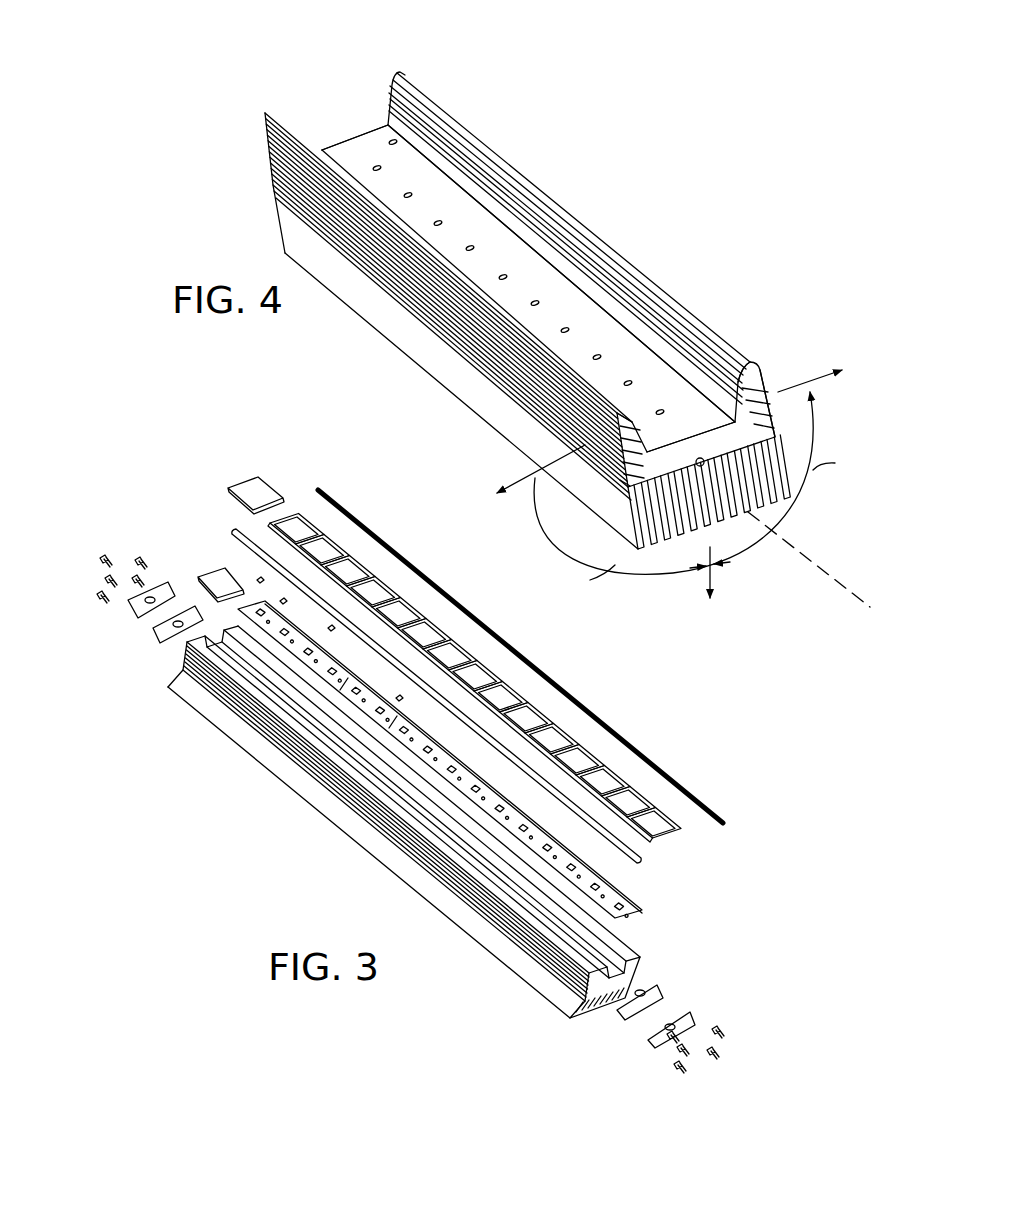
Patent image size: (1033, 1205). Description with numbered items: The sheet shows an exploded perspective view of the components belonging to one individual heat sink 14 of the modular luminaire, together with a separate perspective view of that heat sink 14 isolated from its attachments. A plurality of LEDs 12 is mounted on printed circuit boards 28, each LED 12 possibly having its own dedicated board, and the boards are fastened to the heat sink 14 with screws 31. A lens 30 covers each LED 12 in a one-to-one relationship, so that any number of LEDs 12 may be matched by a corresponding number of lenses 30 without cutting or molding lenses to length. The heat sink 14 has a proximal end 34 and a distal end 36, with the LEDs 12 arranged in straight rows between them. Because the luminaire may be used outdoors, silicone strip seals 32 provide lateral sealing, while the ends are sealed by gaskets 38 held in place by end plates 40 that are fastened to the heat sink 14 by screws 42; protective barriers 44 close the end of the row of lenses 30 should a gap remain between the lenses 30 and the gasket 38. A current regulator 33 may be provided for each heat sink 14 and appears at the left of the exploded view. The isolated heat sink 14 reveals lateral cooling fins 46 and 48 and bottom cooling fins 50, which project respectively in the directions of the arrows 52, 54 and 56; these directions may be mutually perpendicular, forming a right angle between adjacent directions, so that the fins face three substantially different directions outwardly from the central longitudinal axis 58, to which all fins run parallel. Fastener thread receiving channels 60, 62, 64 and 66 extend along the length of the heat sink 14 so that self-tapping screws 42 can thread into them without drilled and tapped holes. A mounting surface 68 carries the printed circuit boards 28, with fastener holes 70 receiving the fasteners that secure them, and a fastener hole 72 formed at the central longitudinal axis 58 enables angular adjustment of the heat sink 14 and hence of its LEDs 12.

In FIG. 3, the LED 12 is at (285, 633).
In FIG. 4, the heat sink 14 is at (668, 107).
In FIG. 3, the heat sink 14 is at (385, 878).
In FIG. 3, the printed circuit board 28 is at (475, 770).
In FIG. 3, the lens 30 is at (325, 542).
In FIG. 3, the screw 31 is at (332, 630).
In FIG. 3, the silicone strip seal 32 is at (230, 533).
In FIG. 3, the current regulator 33 is at (205, 578).
In FIG. 4, the proximal end 34 is at (760, 303).
In FIG. 3, the proximal end 34 is at (570, 1035).
In FIG. 4, the distal end 36 is at (440, 62).
In FIG. 3, the distal end 36 is at (150, 695).
In FIG. 3, the gasket 38 is at (160, 640).
In FIG. 3, the end plate 40 is at (128, 612).
In FIG. 3, the screw 42 is at (100, 592).
In FIG. 3, the protective barrier 44 is at (240, 484).
In FIG. 4, the lateral cooling fin 46 is at (440, 358).
In FIG. 4, the lateral cooling fin 48 is at (675, 266).
In FIG. 4, the bottom cooling fin 50 is at (752, 508).
In FIG. 4, the arrow 52 is at (535, 470).
In FIG. 4, the arrow 54 is at (838, 368).
In FIG. 4, the arrow 56 is at (712, 598).
In FIG. 4, the central longitudinal axis 58 is at (855, 610).
In FIG. 4, the fastener thread receiving channel 60 is at (632, 424).
In FIG. 4, the fastener thread receiving channel 62 is at (607, 495).
In FIG. 4, the fastener thread receiving channel 64 is at (786, 423).
In FIG. 4, the fastener thread receiving channel 66 is at (764, 382).
In FIG. 4, the mounting surface 68 is at (528, 288).
In FIG. 4, the fastener hole 70 is at (412, 192).
In FIG. 4, the fastener hole 72 is at (700, 462).